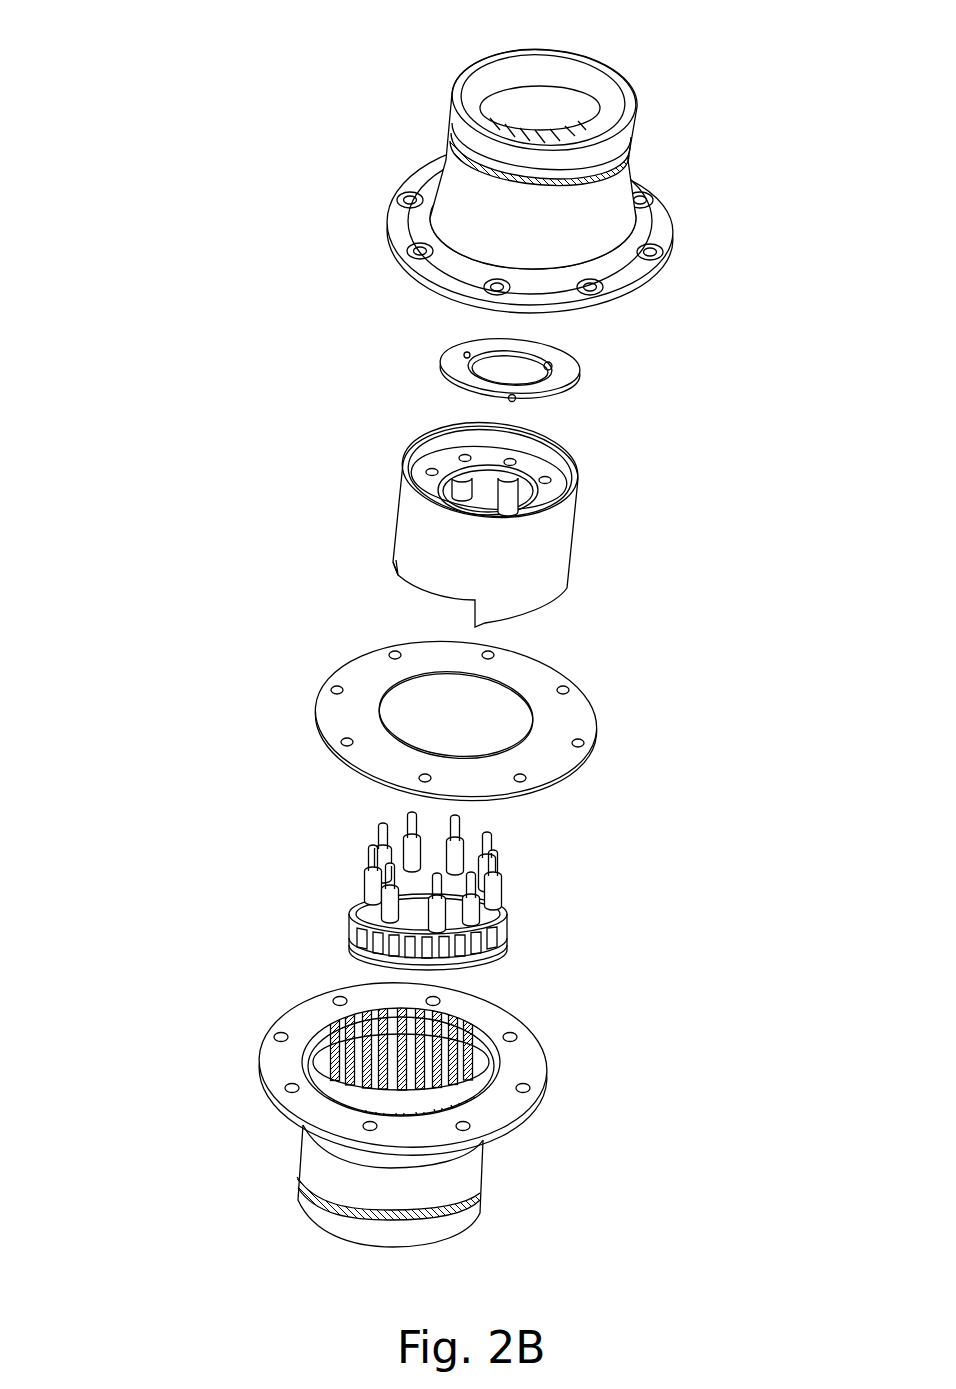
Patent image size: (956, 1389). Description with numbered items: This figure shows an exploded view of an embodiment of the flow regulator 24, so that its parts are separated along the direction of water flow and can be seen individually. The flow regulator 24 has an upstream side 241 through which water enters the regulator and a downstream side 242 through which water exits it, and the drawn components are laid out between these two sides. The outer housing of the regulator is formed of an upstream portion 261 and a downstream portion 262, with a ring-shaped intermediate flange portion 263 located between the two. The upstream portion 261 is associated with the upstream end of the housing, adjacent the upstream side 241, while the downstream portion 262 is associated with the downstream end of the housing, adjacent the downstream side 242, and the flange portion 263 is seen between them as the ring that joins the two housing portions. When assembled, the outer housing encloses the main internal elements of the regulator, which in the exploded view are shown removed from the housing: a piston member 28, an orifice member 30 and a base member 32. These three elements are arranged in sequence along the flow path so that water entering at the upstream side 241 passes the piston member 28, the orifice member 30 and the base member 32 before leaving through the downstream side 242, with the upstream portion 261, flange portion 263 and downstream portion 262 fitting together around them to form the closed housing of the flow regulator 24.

The hub assembly 24 is at (185, 175).
The first hub body 241 is at (530, 158).
The second hub body 242 is at (403, 1135).
The first flange 261 is at (551, 256).
The second flange 262 is at (414, 1200).
The gasket plate 263 is at (305, 683).
The housing cup 28 is at (355, 478).
The retaining ring 30 is at (433, 368).
The pin carrier 32 is at (320, 875).